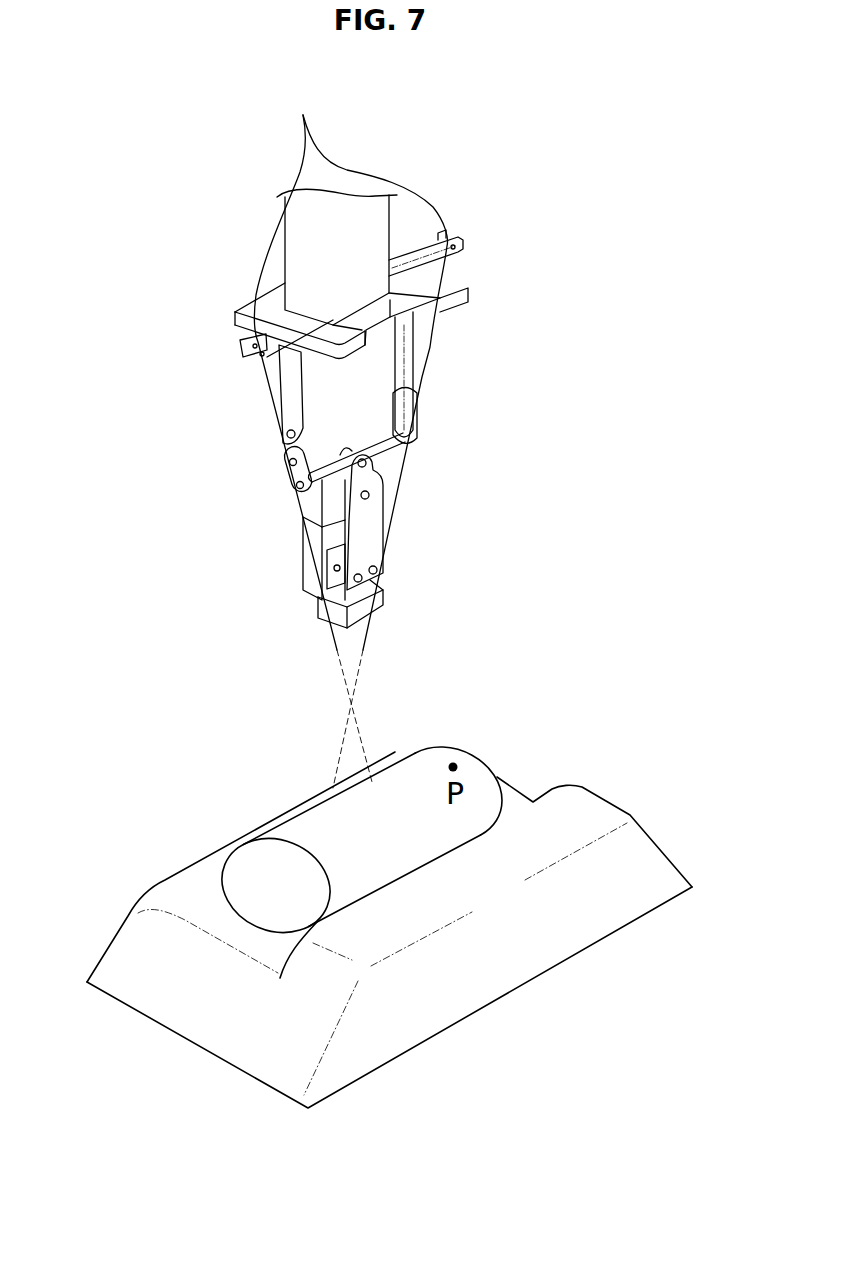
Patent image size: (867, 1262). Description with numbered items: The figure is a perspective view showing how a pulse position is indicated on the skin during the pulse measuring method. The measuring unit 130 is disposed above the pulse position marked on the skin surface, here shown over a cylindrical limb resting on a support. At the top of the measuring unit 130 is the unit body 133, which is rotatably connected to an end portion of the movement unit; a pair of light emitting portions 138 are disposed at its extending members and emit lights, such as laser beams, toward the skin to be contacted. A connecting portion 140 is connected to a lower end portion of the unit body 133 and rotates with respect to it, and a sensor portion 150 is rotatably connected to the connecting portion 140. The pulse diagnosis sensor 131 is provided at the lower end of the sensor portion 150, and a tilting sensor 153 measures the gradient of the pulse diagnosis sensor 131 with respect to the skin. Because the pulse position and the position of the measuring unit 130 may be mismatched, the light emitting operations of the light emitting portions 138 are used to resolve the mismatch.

The measuring unit 130 is at (222, 452).
The pulse diagnosis sensor 131 is at (383, 603).
The unit body 133 is at (432, 327).
The light emitting portions 138 is at (303, 116).
The connecting portion 140 is at (418, 420).
The sensor portion 150 is at (392, 500).
The tilting sensor 153 is at (302, 563).